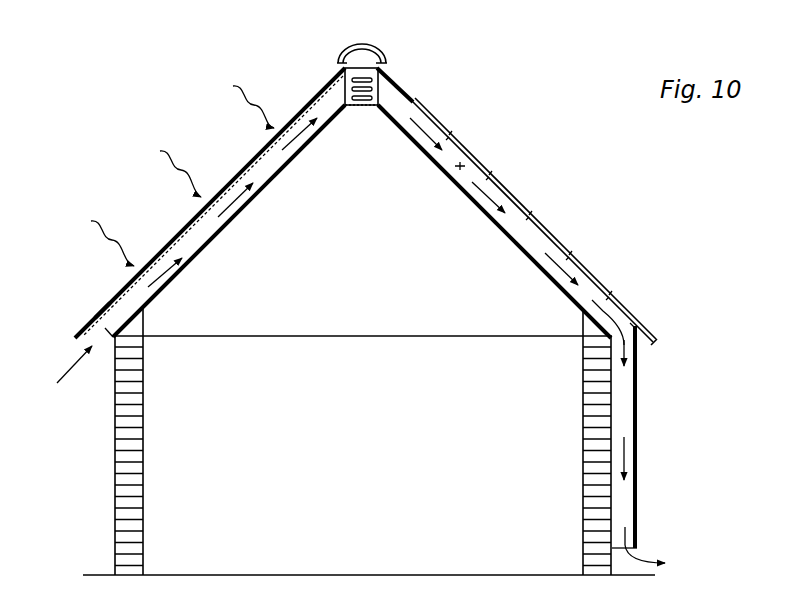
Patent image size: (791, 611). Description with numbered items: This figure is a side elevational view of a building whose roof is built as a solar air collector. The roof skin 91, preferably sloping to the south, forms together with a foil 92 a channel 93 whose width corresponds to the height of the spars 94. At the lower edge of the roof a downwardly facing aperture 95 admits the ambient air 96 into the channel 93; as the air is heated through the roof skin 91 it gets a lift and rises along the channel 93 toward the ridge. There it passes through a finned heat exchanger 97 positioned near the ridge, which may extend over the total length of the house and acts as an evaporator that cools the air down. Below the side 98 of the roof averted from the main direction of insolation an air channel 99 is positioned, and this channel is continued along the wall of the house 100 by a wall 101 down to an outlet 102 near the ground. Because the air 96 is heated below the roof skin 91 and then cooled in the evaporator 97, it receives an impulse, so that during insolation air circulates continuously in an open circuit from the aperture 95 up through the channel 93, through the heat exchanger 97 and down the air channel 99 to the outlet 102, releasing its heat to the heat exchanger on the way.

The roof skin 91 is at (313, 97).
The foil 92 is at (277, 178).
The channel 93 is at (202, 221).
The spars 94 is at (126, 302).
The aperture 95 is at (105, 332).
The ambient air 96 is at (68, 373).
The finned heat exchanger 97 is at (375, 85).
The side of the roof averted from the main direction of insolation 98 is at (517, 198).
The air channel 99 is at (460, 166).
The wall of the house 100 is at (598, 402).
The wall 101 is at (636, 427).
The outlet 102 is at (636, 548).